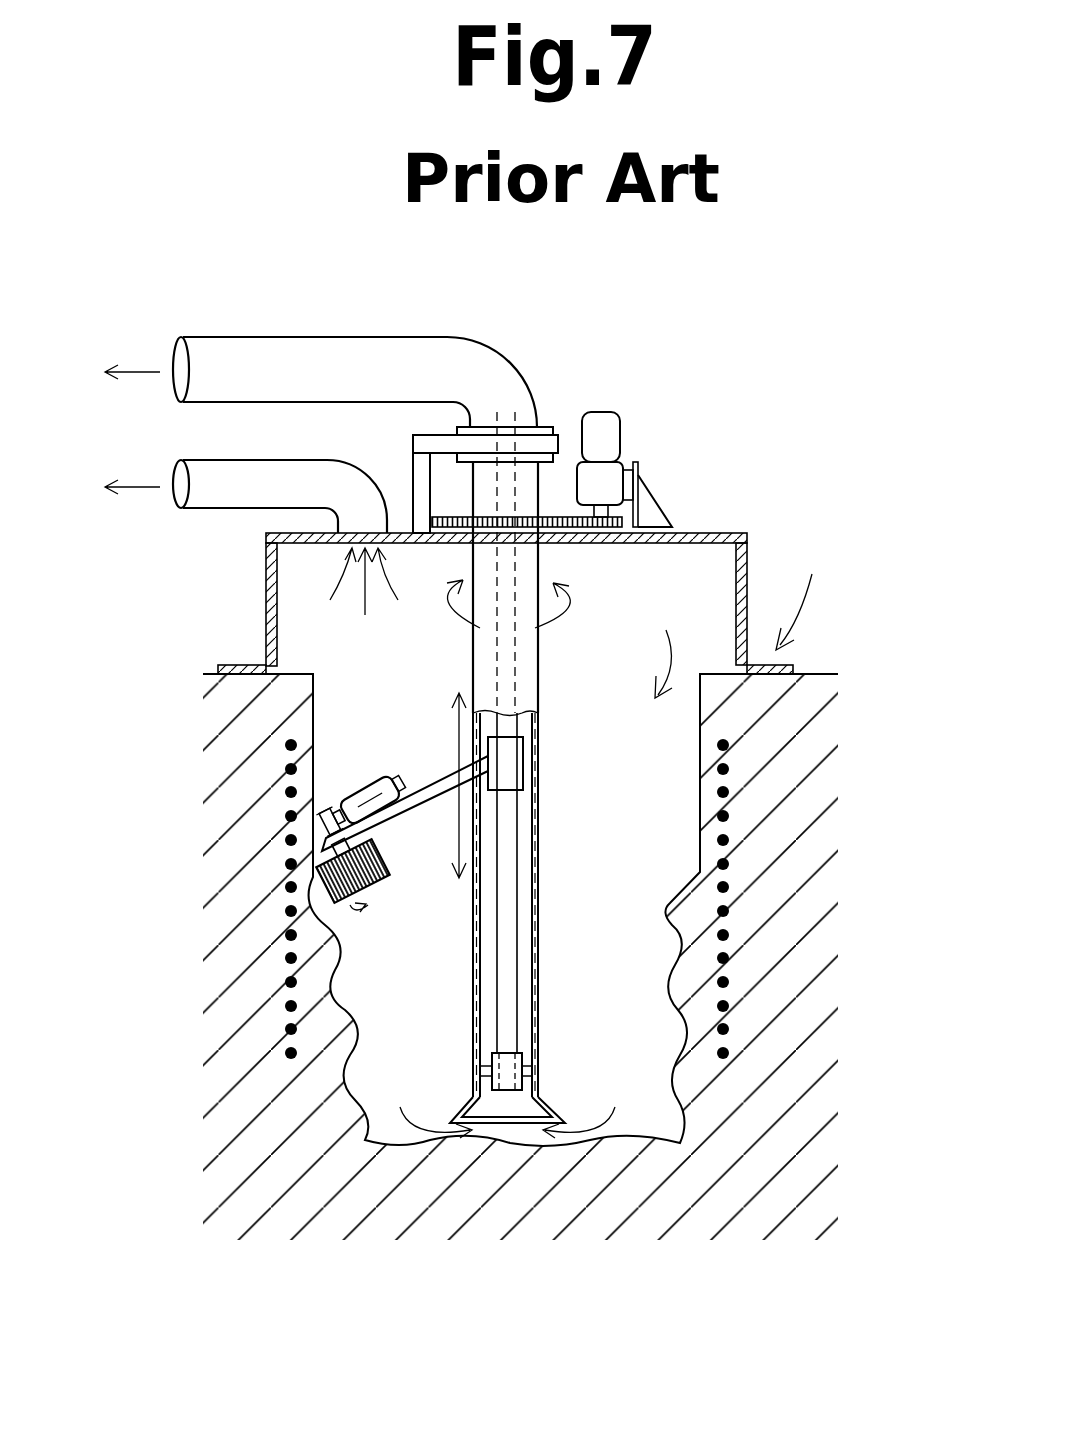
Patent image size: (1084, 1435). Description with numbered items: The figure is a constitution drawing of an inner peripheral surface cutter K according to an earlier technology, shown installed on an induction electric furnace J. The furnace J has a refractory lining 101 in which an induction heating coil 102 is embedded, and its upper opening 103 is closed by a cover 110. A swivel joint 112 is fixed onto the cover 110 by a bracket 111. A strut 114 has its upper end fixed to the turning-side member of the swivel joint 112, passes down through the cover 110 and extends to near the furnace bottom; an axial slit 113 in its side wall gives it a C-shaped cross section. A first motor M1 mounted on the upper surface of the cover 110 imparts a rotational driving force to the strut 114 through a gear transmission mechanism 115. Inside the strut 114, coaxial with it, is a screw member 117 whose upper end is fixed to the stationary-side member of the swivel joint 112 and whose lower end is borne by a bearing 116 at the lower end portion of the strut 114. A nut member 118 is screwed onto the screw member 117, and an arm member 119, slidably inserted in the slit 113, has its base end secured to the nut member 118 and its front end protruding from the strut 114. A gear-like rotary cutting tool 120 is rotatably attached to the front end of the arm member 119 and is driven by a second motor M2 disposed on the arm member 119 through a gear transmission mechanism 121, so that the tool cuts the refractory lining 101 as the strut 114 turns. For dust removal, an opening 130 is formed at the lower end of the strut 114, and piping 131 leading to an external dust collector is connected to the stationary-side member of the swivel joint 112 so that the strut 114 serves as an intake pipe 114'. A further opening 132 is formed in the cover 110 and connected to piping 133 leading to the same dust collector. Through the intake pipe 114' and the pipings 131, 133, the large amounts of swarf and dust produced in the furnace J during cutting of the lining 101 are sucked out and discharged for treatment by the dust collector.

The refractory lining 101 is at (700, 750).
The induction heating coil 102 is at (729, 884).
The upper opening 103 is at (663, 646).
The cover 110 is at (720, 532).
The bracket 111 is at (425, 443).
The swivel joint 112 is at (527, 432).
The axial slit 113 is at (478, 1028).
The strut 114 is at (546, 592).
The intake pipe 114' is at (544, 905).
The gear transmission mechanism 115 is at (457, 498).
The bearing 116 is at (507, 1070).
The screw member 117 is at (527, 907).
The nut member 118 is at (505, 758).
The arm member 119 is at (430, 800).
The rotary cutting tool 120 is at (370, 900).
The gear transmission mechanism 121 is at (325, 808).
The opening 130 is at (510, 1108).
The piping 131 is at (272, 360).
The opening 132 is at (347, 543).
The piping 133 is at (252, 490).
The first motor M1 is at (605, 445).
The second motor M2 is at (386, 778).
The inner peripheral surface cutter K is at (684, 486).
The induction electric furnace J is at (797, 594).